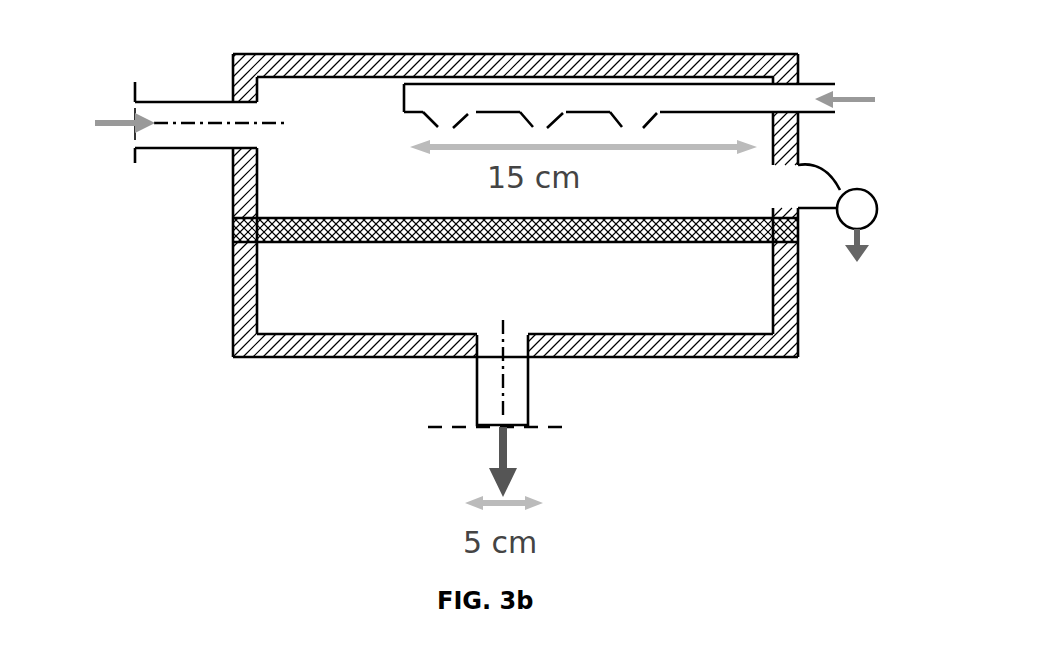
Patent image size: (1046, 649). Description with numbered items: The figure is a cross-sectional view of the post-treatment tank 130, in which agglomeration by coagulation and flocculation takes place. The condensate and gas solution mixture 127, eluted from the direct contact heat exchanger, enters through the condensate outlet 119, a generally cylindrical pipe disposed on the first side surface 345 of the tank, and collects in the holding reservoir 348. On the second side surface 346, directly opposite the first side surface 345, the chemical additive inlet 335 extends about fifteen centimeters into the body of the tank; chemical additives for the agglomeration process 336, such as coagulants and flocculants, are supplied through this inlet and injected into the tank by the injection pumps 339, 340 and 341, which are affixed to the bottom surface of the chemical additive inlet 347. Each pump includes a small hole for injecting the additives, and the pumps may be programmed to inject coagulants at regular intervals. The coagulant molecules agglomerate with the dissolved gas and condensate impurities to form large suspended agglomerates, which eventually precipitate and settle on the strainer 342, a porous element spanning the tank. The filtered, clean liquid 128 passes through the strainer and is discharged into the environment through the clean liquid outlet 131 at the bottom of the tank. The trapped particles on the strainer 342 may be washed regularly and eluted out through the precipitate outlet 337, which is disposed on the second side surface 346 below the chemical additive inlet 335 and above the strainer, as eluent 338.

The post-treatment tank 130 is at (233, 265).
The holding reservoir 348 is at (287, 173).
The condensate outlet 119 is at (172, 140).
The condensate and gas solution mixture 127 is at (118, 128).
The first side surface 345 is at (233, 231).
The strainer 342 is at (365, 230).
The injection pump 340 is at (537, 117).
The injection pump 339 is at (443, 117).
The injection pump 341 is at (632, 118).
The bottom surface of the chemical additive inlet 347 is at (733, 112).
The chemical additive inlet 335 is at (805, 98).
The chemical additives for the agglomeration process 336 is at (863, 98).
The precipitate outlet 337 is at (838, 183).
The eluent 338 is at (857, 262).
The second side surface 346 is at (800, 322).
The clean liquid outlet 131 is at (520, 392).
The filtered, clean liquid 128 is at (515, 452).